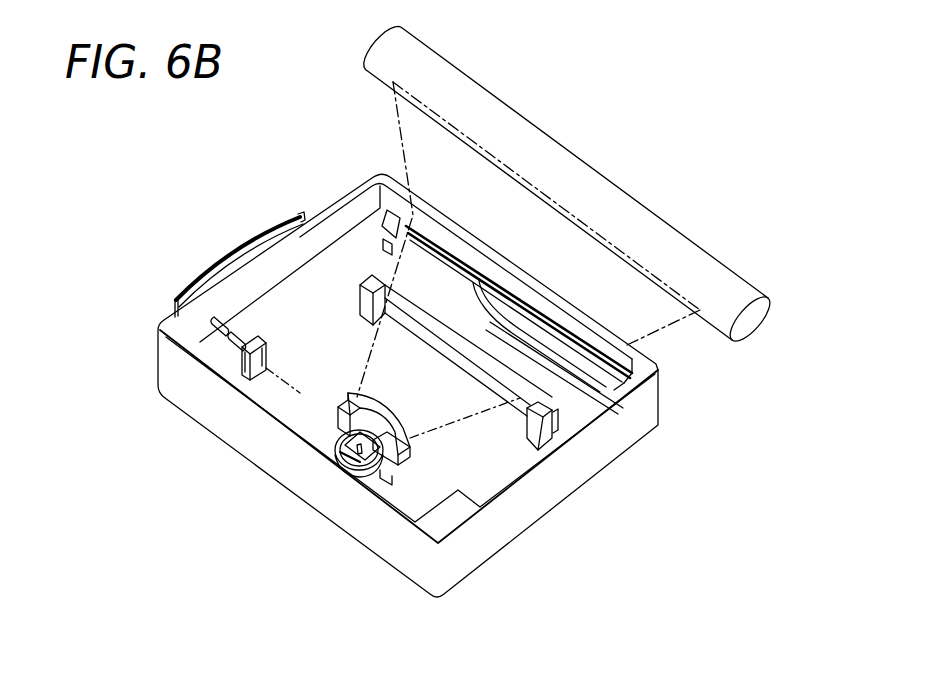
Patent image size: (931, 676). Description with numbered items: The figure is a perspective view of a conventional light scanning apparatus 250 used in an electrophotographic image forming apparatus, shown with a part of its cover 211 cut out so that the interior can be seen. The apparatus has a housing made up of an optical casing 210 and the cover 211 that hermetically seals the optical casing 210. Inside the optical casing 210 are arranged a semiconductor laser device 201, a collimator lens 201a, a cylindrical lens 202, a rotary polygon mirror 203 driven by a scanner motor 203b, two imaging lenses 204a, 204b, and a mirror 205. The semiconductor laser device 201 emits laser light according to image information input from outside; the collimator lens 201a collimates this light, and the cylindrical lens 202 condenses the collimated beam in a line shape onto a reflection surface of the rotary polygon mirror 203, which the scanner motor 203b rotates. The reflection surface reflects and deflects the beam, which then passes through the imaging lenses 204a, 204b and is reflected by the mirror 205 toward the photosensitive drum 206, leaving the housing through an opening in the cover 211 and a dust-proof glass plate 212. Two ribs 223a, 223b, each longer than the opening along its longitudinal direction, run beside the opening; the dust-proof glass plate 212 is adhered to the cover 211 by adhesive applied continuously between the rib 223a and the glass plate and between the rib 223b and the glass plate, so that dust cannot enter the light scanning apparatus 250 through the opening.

The semiconductor laser device 201 is at (215, 320).
The collimator lens 201a is at (240, 337).
The cylindrical lens 202 is at (244, 373).
The rotary polygon mirror 203 is at (347, 475).
The scanner motor 203b is at (305, 398).
The imaging lens 204a is at (418, 440).
The imaging lens 204b is at (515, 382).
The mirror 205 is at (388, 217).
The photosensitive drum 206 is at (438, 78).
The optical casing 210 is at (335, 208).
The cover 211 is at (603, 393).
The dust-proof glass plate 212 is at (660, 371).
The rib 223a is at (533, 280).
The rib 223b is at (622, 412).
The light scanning apparatus 250 is at (390, 598).